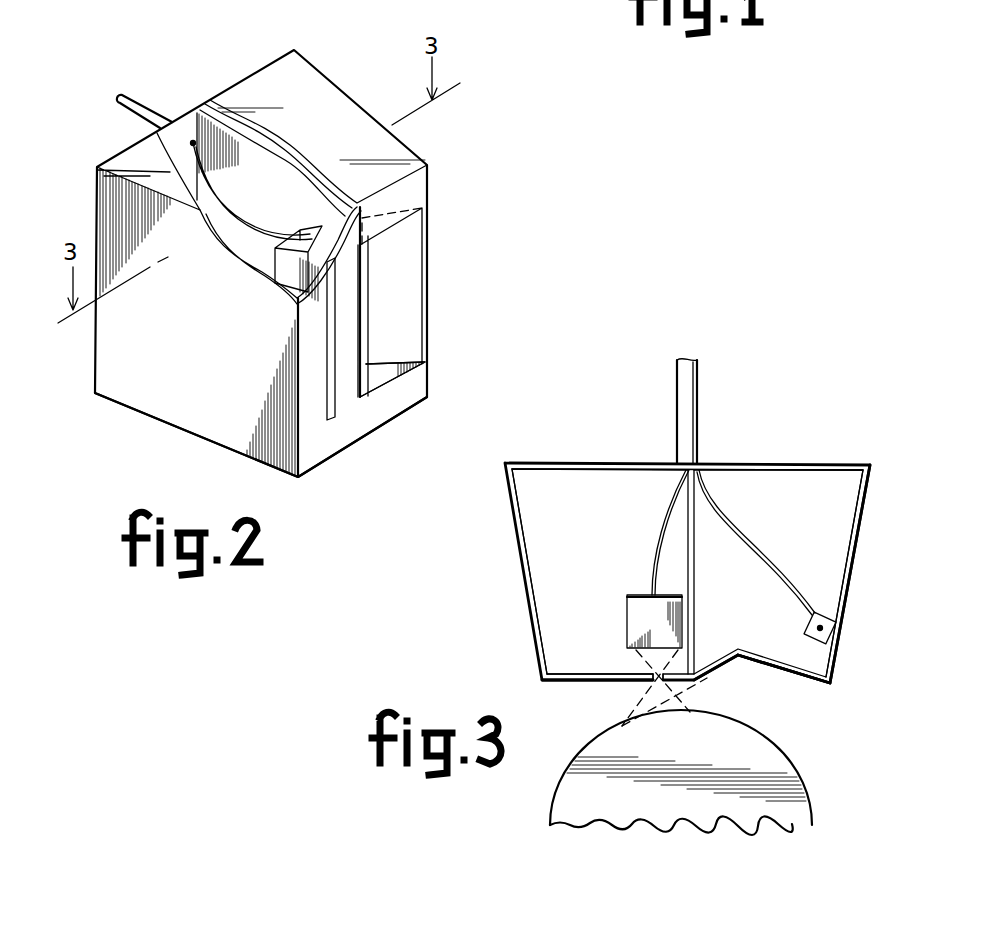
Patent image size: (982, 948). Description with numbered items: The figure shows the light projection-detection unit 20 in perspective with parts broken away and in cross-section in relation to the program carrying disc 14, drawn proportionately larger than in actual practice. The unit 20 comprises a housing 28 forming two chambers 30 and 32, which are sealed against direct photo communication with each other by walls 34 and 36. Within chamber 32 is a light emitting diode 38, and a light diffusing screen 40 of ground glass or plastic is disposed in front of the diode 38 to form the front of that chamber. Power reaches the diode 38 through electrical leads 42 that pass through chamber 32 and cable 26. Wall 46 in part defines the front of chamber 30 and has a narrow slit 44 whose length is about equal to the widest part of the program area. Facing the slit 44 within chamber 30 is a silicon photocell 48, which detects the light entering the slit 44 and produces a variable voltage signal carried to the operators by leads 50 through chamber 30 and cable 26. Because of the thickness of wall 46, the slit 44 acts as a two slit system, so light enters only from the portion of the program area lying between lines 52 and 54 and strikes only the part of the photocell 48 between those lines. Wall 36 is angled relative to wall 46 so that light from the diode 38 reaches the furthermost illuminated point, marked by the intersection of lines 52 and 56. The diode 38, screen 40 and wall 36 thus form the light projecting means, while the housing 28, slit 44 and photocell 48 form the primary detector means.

In FIG. 3, the disc 14 is at (688, 812).
In FIG. 2, the light projection-detection unit 20 is at (330, 60).
In FIG. 3, the light projection-detection unit 20 is at (630, 423).
In FIG. 2, the cable 26 is at (143, 100).
In FIG. 3, the cable 26 is at (698, 396).
In FIG. 2, the housing 28 is at (335, 129).
In FIG. 3, the housing 28 is at (780, 465).
In FIG. 3, the chamber 30 is at (603, 510).
In FIG. 3, the chamber 32 is at (819, 510).
In FIG. 2, the wall 34 is at (225, 130).
In FIG. 3, the wall 34 is at (697, 575).
In FIG. 2, the wall 36 is at (368, 368).
In FIG. 3, the wall 36 is at (730, 665).
In FIG. 3, the light emitting diode 38 is at (832, 622).
In FIG. 2, the light diffusing screen 40 is at (405, 295).
In FIG. 3, the light diffusing screen 40 is at (800, 683).
In FIG. 3, the electrical leads 42 is at (785, 560).
In FIG. 2, the slit 44 is at (330, 410).
In FIG. 2, the wall 46 is at (345, 423).
In FIG. 3, the wall 46 is at (590, 683).
In FIG. 2, the photocell 48 is at (305, 240).
In FIG. 3, the photocell 48 is at (628, 616).
In FIG. 3, the leads 50 is at (658, 540).
In FIG. 3, the line 52 is at (633, 707).
In FIG. 3, the line 54 is at (685, 712).
In FIG. 3, the line 56 is at (664, 708).